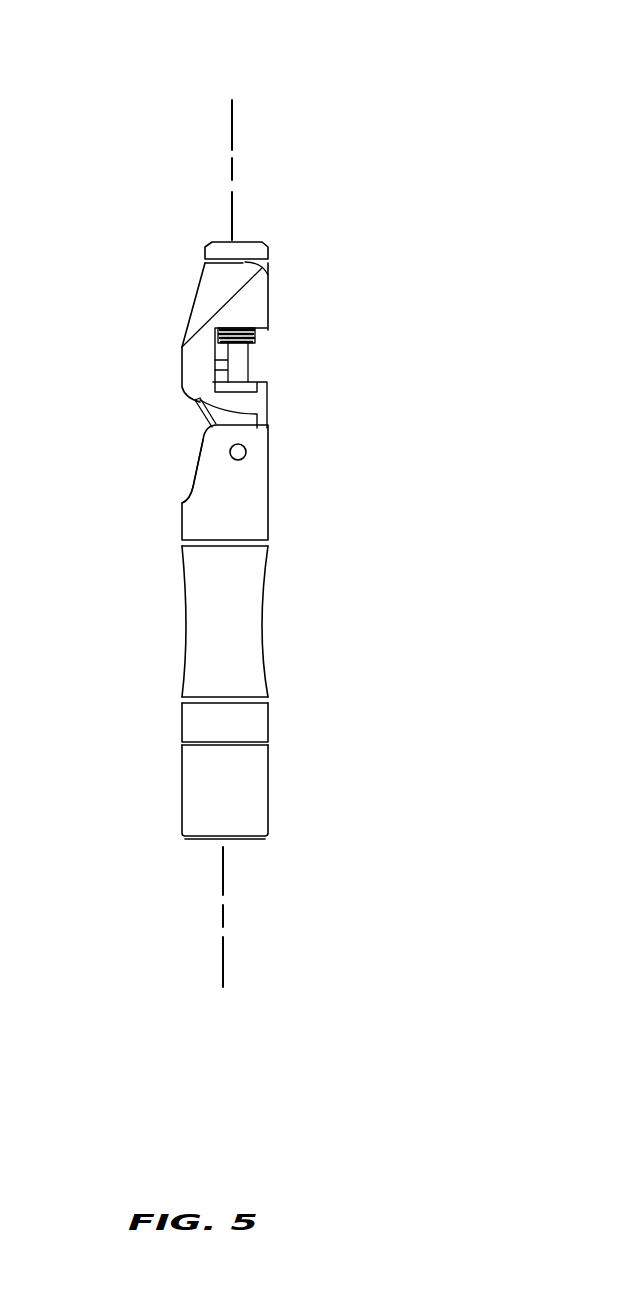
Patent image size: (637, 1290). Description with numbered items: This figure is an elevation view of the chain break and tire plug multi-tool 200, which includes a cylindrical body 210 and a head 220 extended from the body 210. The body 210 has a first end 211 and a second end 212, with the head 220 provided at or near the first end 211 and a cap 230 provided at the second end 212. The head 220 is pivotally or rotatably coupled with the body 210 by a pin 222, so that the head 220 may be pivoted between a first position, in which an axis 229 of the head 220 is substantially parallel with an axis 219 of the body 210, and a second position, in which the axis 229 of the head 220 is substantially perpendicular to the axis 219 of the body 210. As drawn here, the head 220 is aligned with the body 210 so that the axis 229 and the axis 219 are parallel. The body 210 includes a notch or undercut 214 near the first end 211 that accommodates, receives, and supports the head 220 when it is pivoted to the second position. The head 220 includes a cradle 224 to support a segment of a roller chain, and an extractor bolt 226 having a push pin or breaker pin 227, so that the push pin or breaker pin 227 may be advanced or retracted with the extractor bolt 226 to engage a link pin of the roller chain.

The chain break and tire plug multi-tool 200 is at (398, 85).
The cylindrical body 210 is at (284, 598).
The first end 211 is at (289, 424).
The second end 212 is at (163, 729).
The notch or undercut 214 is at (192, 486).
The axis of body 219 is at (223, 953).
The head 220 is at (148, 262).
The pin 222 is at (245, 458).
The cradle 224 is at (287, 324).
The extractor bolt 226 is at (252, 244).
The push pin or breaker pin 227 is at (241, 368).
The axis of head 229 is at (232, 127).
The cap 230 is at (163, 806).